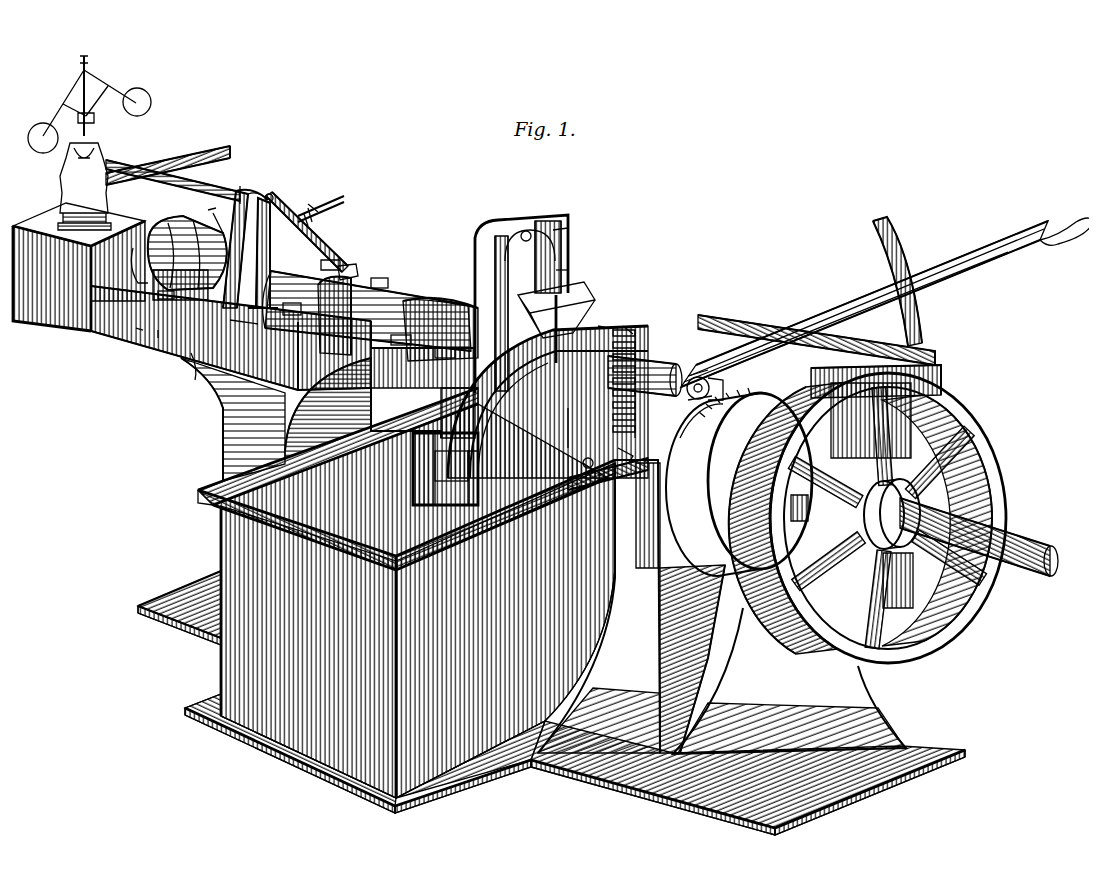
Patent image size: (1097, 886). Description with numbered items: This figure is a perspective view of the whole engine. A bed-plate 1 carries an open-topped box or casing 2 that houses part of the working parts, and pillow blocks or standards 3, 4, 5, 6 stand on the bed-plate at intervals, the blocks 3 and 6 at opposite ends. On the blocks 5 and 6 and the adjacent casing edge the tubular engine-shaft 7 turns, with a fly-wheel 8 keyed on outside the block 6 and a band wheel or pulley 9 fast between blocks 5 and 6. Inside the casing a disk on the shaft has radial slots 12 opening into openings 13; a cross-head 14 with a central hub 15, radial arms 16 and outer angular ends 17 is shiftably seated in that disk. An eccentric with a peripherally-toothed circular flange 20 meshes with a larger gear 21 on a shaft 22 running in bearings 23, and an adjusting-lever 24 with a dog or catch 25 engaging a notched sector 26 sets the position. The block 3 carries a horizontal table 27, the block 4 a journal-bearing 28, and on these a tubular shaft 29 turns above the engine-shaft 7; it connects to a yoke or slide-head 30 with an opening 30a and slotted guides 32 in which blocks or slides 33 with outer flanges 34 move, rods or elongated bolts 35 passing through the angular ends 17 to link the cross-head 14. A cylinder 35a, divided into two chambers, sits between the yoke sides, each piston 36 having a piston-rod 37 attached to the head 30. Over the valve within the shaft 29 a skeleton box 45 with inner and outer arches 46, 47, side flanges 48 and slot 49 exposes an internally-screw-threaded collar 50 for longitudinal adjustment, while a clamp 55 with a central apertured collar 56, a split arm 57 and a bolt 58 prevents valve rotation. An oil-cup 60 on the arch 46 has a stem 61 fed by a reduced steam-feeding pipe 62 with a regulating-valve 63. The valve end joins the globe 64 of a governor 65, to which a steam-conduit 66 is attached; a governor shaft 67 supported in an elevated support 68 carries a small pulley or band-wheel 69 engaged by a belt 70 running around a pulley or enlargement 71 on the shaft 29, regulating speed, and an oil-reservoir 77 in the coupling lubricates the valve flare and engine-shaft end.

The bed-plate 1 is at (551, 703).
The box or casing 2 is at (406, 593).
The pillow block or standard 3 is at (276, 419).
The pillow block or standard 4 is at (423, 379).
The pillow block or standard 5 is at (631, 606).
The pillow block or standard 6 is at (789, 681).
The engine-shaft 7 is at (1032, 542).
The fly-wheel 8 is at (874, 518).
The band wheel or pulley 9 is at (739, 484).
The radial slots 12 is at (606, 381).
The openings 13 is at (578, 490).
The cross-head 14 is at (615, 384).
The central hub 15 is at (592, 318).
The radial arms 16 is at (581, 460).
The outer angular ends 17 is at (762, 461).
The peripherally-toothed circular flange 20 is at (641, 449).
The gear 21 is at (660, 348).
The shaft 22 is at (702, 376).
The bearings 23 is at (714, 419).
The adjusting-lever 24 is at (864, 304).
The dog or catch 25 is at (945, 284).
The notched sector 26 is at (912, 281).
The horizontal table 27 is at (170, 348).
The journal-bearing 28 is at (440, 298).
The tubular shaft 29 is at (380, 274).
The yoke or slide-head 30 is at (556, 264).
The opening 30a is at (556, 224).
The slotted guides 32 is at (428, 469).
The blocks or slides 33 is at (513, 420).
The outer flanges 34 is at (548, 402).
The rods or elongated bolts 35 is at (558, 428).
The cylinder 35a is at (578, 284).
The piston 36 is at (578, 457).
The piston-rod 37 is at (518, 222).
The skeleton box 45 is at (200, 205).
The inner arch 46 is at (188, 375).
The outer arch 47 is at (168, 262).
The side flanges 48 is at (150, 322).
The slot 49 is at (128, 320).
The internally-screw-threaded collar 50 is at (158, 292).
The clamp 55 is at (135, 240).
The central apertured collar 56 is at (79, 267).
The arm 57 is at (230, 188).
The bolt 58 is at (181, 236).
The oil-cup 60 is at (245, 238).
The stem 61 is at (268, 238).
The reduced steam-feeding pipe 62 is at (292, 208).
The regulating-valve 63 is at (310, 204).
The globe 64 is at (68, 186).
The governor 65 is at (89, 104).
The steam-conduit 66 is at (200, 140).
The shaft 67 is at (152, 160).
The elevated support 68 is at (290, 212).
The small pulley or band-wheel 69 is at (265, 200).
The belt 70 is at (250, 184).
The pulley or enlargement 71 is at (242, 326).
The oil-reservoir 77 is at (620, 318).